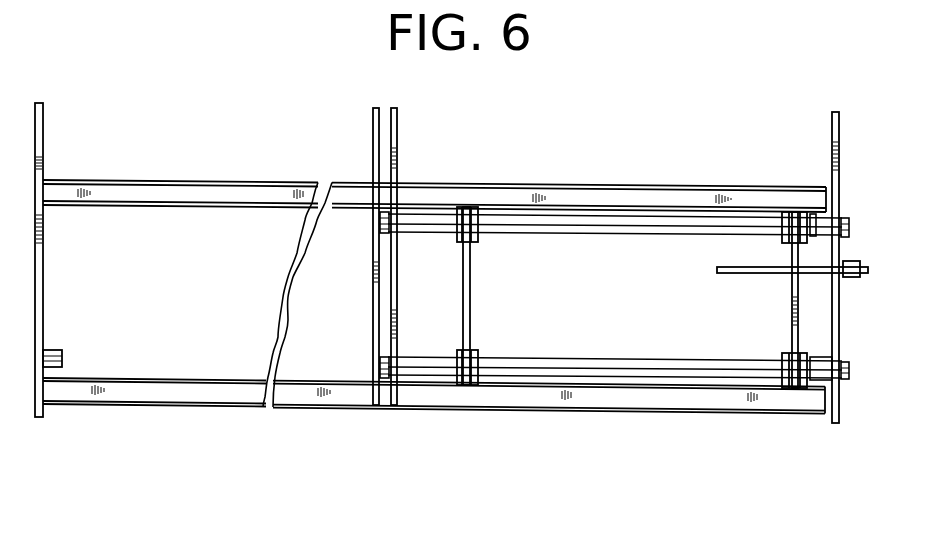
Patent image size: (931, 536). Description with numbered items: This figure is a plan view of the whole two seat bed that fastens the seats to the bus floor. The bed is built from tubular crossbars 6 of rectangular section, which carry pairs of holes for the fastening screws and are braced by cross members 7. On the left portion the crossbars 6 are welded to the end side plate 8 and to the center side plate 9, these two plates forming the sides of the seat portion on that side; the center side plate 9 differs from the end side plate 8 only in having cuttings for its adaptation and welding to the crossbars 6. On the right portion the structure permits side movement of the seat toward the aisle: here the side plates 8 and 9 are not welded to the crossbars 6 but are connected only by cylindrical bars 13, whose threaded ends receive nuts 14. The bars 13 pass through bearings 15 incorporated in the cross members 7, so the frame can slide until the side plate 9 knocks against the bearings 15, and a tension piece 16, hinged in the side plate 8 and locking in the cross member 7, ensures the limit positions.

The crossbar 6 is at (195, 187).
The cross member 7 is at (470, 307).
The end side plate 8 is at (43, 133).
The center side plate 9 is at (397, 155).
The cylindrical bar 13 is at (641, 362).
The nut 14 is at (848, 218).
The bearing 15 is at (472, 208).
The tension piece 16 is at (733, 273).